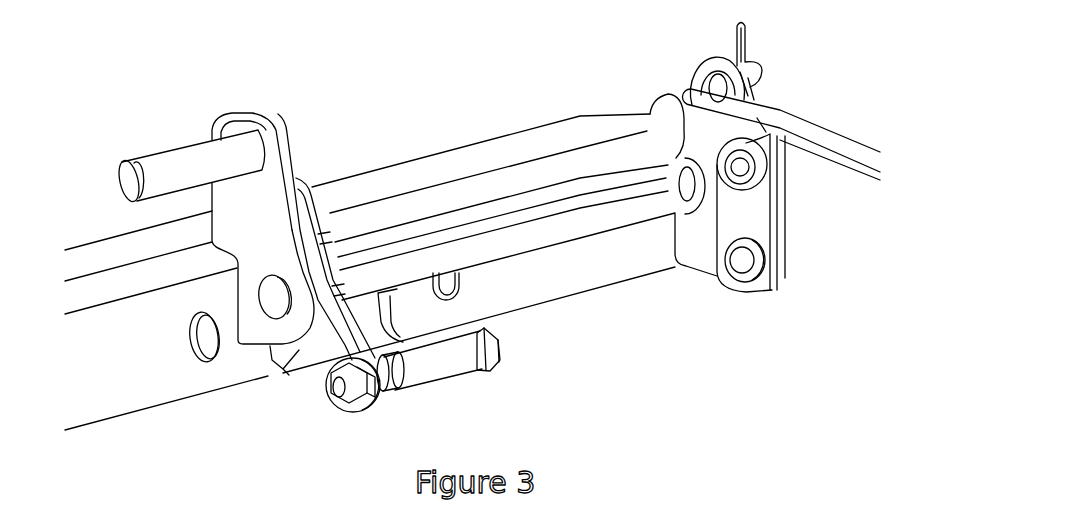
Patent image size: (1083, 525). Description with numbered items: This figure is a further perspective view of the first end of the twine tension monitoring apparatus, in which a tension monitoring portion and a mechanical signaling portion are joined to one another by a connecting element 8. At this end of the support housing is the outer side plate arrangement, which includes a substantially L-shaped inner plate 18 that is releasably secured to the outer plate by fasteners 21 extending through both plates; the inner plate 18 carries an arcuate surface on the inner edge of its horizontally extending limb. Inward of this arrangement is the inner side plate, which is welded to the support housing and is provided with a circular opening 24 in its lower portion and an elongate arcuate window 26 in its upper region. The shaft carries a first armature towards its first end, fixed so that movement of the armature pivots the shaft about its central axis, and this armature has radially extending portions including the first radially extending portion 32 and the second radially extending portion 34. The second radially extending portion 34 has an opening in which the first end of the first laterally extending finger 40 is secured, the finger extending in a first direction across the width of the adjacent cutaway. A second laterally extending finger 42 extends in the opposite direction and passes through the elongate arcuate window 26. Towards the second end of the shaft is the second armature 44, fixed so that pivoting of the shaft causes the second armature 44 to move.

The connecting element 8 is at (807, 126).
The inner plate 18 is at (755, 213).
The fasteners 21 is at (738, 172).
The circular opening 24 is at (249, 298).
The elongate arcuate window 26 is at (257, 132).
The first radially extending portion 32 is at (280, 358).
The second radially extending portion 34 is at (328, 345).
The first laterally extending finger 40 is at (450, 372).
The second laterally extending finger 42 is at (192, 157).
The second armature 44 is at (702, 127).